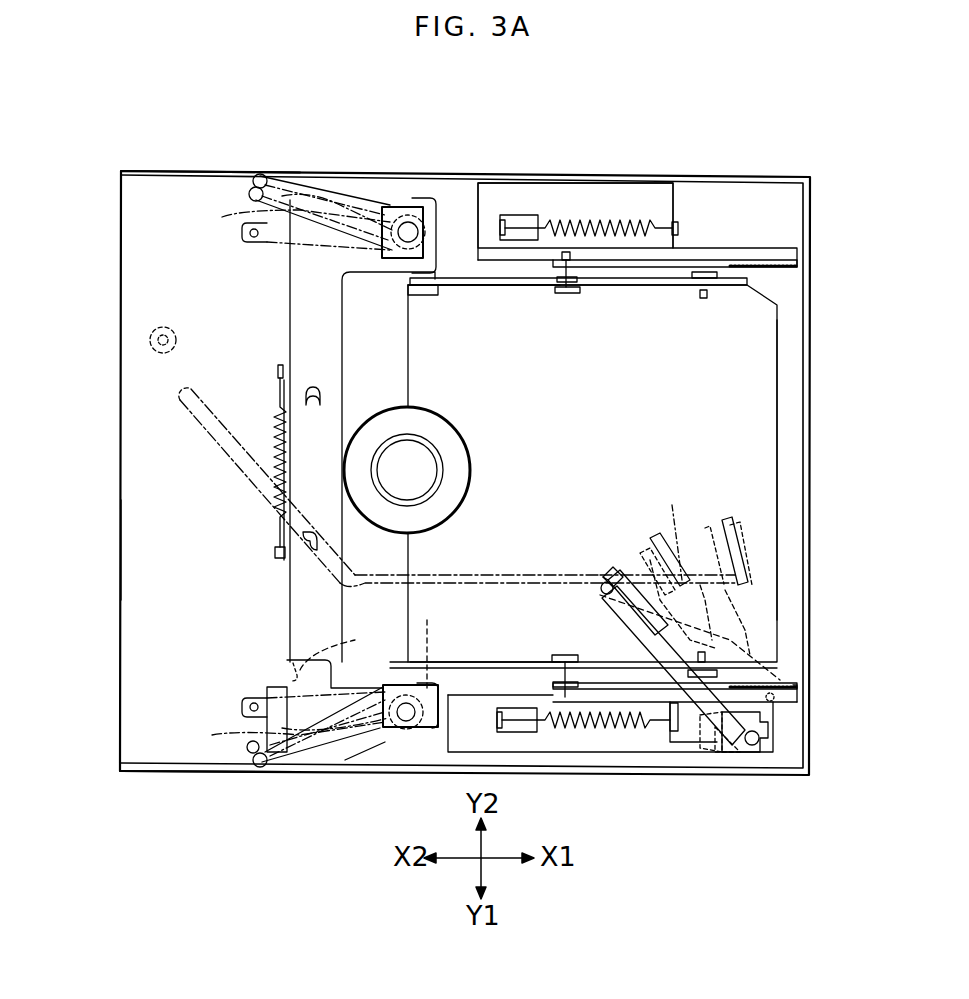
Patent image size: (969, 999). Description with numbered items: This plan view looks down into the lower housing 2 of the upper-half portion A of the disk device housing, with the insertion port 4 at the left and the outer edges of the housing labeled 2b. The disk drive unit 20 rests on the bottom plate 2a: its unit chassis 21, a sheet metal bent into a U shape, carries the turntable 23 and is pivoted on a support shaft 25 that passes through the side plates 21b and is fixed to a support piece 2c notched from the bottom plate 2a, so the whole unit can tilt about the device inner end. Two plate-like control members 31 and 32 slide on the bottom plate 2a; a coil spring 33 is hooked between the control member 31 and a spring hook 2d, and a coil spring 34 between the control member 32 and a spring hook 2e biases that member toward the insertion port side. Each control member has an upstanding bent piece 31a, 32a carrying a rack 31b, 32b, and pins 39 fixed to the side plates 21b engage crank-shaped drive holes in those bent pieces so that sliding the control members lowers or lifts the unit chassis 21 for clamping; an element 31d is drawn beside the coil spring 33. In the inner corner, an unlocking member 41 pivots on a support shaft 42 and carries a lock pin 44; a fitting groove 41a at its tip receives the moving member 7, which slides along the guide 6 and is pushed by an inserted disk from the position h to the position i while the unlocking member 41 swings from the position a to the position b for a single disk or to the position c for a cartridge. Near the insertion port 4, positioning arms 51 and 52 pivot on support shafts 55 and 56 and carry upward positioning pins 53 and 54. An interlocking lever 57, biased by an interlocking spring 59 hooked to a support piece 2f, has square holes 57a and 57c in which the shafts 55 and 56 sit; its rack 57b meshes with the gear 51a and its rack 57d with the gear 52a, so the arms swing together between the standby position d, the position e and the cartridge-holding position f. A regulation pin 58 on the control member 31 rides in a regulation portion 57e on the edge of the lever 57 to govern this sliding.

The lower housing 2 is at (818, 352).
The bottom plate 2a is at (136, 352).
The side wall 2b is at (163, 170).
The support piece 2c is at (747, 281).
The spring hook 2d is at (508, 735).
The spring hook 2e is at (505, 213).
The support piece 2f is at (278, 371).
The insertion port 4 is at (118, 540).
The guide 6 is at (235, 480).
The moving member 7 is at (600, 580).
The disk drive unit 20 is at (780, 420).
The unit chassis 21 is at (752, 445).
The side plates 21b is at (525, 288).
The turntable 23 is at (462, 451).
The support shaft 25 is at (705, 298).
The control member 31 is at (602, 735).
The bent piece 31a is at (655, 690).
The rack 31b is at (790, 705).
The spring seat 31d is at (735, 752).
The control member 32 is at (655, 182).
The bent piece 32a is at (653, 270).
The rack 32b is at (775, 263).
The coil spring 33 is at (640, 755).
The coil spring 34 is at (598, 218).
The pins 39 is at (585, 290).
The unlocking member 41 is at (770, 738).
The fitting groove 41a is at (607, 572).
The support shaft 42 is at (757, 746).
The lock pin 44 is at (712, 755).
The positioning arm 51 is at (310, 778).
The gear 51a is at (443, 640).
The positioning arm 52 is at (298, 180).
The gear 52a is at (404, 200).
The positioning pin 53 is at (256, 775).
The positioning pin 54 is at (262, 174).
The support shaft 55 is at (415, 685).
The support shaft 56 is at (415, 210).
The interlocking lever 57 is at (297, 323).
The square hole 57a is at (382, 770).
The rack 57b is at (420, 730).
The square hole 57c is at (385, 280).
The rack 57d is at (418, 300).
The regulation portion 57e is at (280, 664).
The regulation pin 58 is at (346, 639).
The interlocking spring 59 is at (272, 425).
The upper-half portion A is at (690, 160).
The pivotal position of unlocking member a is at (605, 595).
The pivotal position of unlocking member b is at (652, 536).
The pivotal position of unlocking member c is at (738, 518).
The standby position of positioning arms d is at (340, 180).
The pivotal position of positioning arms e is at (270, 248).
The pivotal position of positioning arms f is at (291, 472).
The position of moving member h is at (600, 585).
The position of moving member i is at (690, 565).